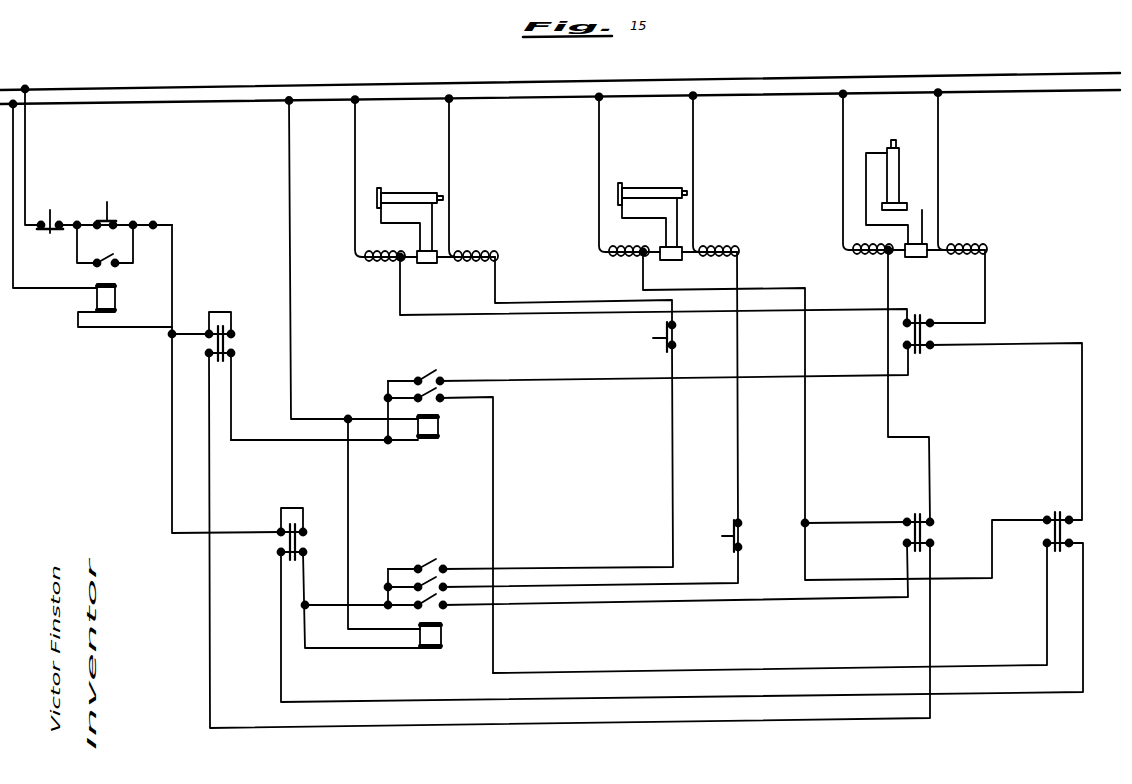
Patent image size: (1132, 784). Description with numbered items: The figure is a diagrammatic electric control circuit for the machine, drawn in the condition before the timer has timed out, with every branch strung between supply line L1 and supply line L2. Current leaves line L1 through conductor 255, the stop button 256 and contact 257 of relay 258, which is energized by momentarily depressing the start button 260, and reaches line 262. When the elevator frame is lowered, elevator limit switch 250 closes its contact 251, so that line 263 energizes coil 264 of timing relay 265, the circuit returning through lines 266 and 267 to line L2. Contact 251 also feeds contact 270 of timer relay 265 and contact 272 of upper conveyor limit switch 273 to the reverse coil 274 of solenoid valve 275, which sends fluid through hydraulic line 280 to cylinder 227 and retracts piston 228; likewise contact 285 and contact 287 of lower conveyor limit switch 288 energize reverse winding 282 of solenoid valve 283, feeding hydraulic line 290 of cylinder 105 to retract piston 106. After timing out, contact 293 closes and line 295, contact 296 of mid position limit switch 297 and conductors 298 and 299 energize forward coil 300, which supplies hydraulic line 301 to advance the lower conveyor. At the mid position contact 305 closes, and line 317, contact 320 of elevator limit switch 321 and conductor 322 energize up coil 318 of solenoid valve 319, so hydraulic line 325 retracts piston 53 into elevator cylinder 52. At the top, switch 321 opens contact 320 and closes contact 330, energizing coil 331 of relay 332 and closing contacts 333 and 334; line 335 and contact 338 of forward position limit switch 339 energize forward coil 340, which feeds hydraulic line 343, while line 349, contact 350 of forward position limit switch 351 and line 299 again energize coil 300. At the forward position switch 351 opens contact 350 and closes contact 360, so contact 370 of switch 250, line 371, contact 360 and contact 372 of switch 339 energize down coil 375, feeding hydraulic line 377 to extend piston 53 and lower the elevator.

The supply line L1 is at (133, 88).
The supply line L2 is at (147, 104).
The conductor 255 is at (25, 168).
The stop button 256 is at (48, 236).
The contact 257 is at (104, 256).
The relay 258 is at (115, 298).
The start button 260 is at (110, 212).
The line 262 is at (172, 276).
The line 317 is at (205, 318).
The contact 320 is at (206, 353).
The contact 330 is at (224, 345).
The elevator limit switch 321 is at (259, 374).
The conductor 322 is at (210, 479).
The line 267 is at (292, 312).
The coil 331 is at (438, 426).
The relay 332 is at (439, 462).
The contact 333 is at (437, 372).
The contact 334 is at (444, 392).
The line 335 is at (560, 379).
The line 349 is at (640, 671).
The line 266 is at (350, 505).
The contact 370 is at (285, 538).
The contact 251 is at (298, 546).
The elevator limit switch 250 is at (300, 580).
The line 371 is at (377, 702).
The line 263 is at (350, 649).
The contact 293 is at (440, 608).
The contact 270 is at (437, 565).
The contact 285 is at (444, 583).
The energizing coil 264 is at (441, 641).
The timing relay 265 is at (442, 670).
The forward coil 340 is at (376, 262).
The solenoid valve 275 is at (427, 265).
The reverse coil 274 is at (477, 252).
The cylinder 227 is at (393, 192).
The piston 228 is at (440, 195).
The hydraulic line 280 is at (432, 212).
The hydraulic line 343 is at (392, 224).
The forward coil 300 is at (618, 258).
The solenoid valve 283 is at (671, 263).
The reverse winding 282 is at (718, 250).
The cylinder 105 is at (633, 188).
The piston 106 is at (684, 190).
The hydraulic line 290 is at (677, 208).
The hydraulic line 301 is at (634, 220).
The conductor 299 is at (806, 451).
The up coil 318 is at (862, 256).
The solenoid valve 319 is at (918, 262).
The down coil 375 is at (963, 250).
The elevator cylinder 52 is at (895, 176).
The piston 53 is at (895, 141).
The hydraulic line 325 is at (866, 157).
The hydraulic line 377 is at (922, 212).
The contact 272 is at (677, 333).
The upper conveyor limit switch 273 is at (707, 357).
The contact 287 is at (742, 533).
The lower conveyor limit switch 288 is at (771, 557).
The contact 338 is at (913, 320).
The upper conveyor forward position limit switch 339 is at (931, 372).
The contact 372 is at (922, 336).
The conductor 298 is at (855, 522).
The contact 296 is at (905, 534).
The contact 305 is at (934, 534).
The lower conveyor mid position limit switch 297 is at (961, 555).
The line 295 is at (592, 600).
The contact 350 is at (1044, 534).
The lower conveyor forward position limit switch 351 is at (1071, 574).
The contact 360 is at (1073, 533).